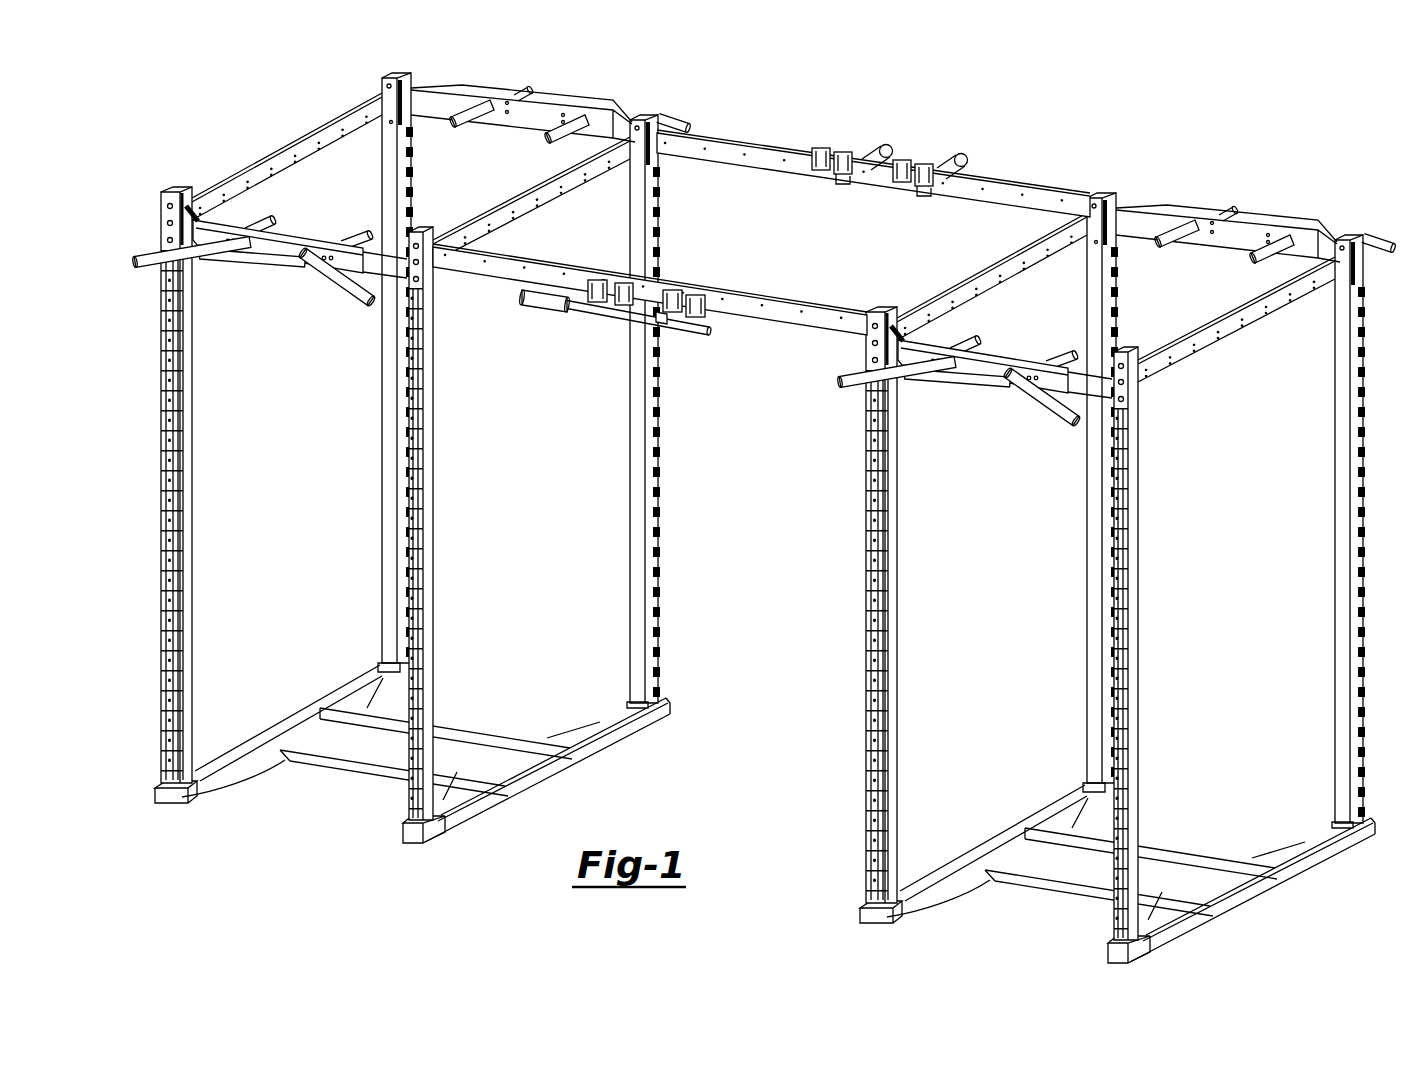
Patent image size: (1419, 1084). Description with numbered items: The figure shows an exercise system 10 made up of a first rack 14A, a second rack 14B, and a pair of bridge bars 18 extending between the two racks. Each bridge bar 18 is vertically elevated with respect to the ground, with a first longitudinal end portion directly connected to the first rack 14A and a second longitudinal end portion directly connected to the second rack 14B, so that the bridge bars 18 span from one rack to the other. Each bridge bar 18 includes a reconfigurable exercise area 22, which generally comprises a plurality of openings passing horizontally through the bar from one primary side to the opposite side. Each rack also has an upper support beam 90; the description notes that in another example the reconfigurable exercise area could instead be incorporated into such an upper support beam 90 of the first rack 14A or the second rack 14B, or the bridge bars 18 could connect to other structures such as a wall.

The exercise system 10 is at (773, 503).
The first rack 14A is at (1320, 185).
The second rack 14B is at (641, 96).
The bridge bar 18 is at (1004, 182).
The reconfigurable exercise area 22 is at (932, 140).
The upper support beam 90 is at (263, 175).